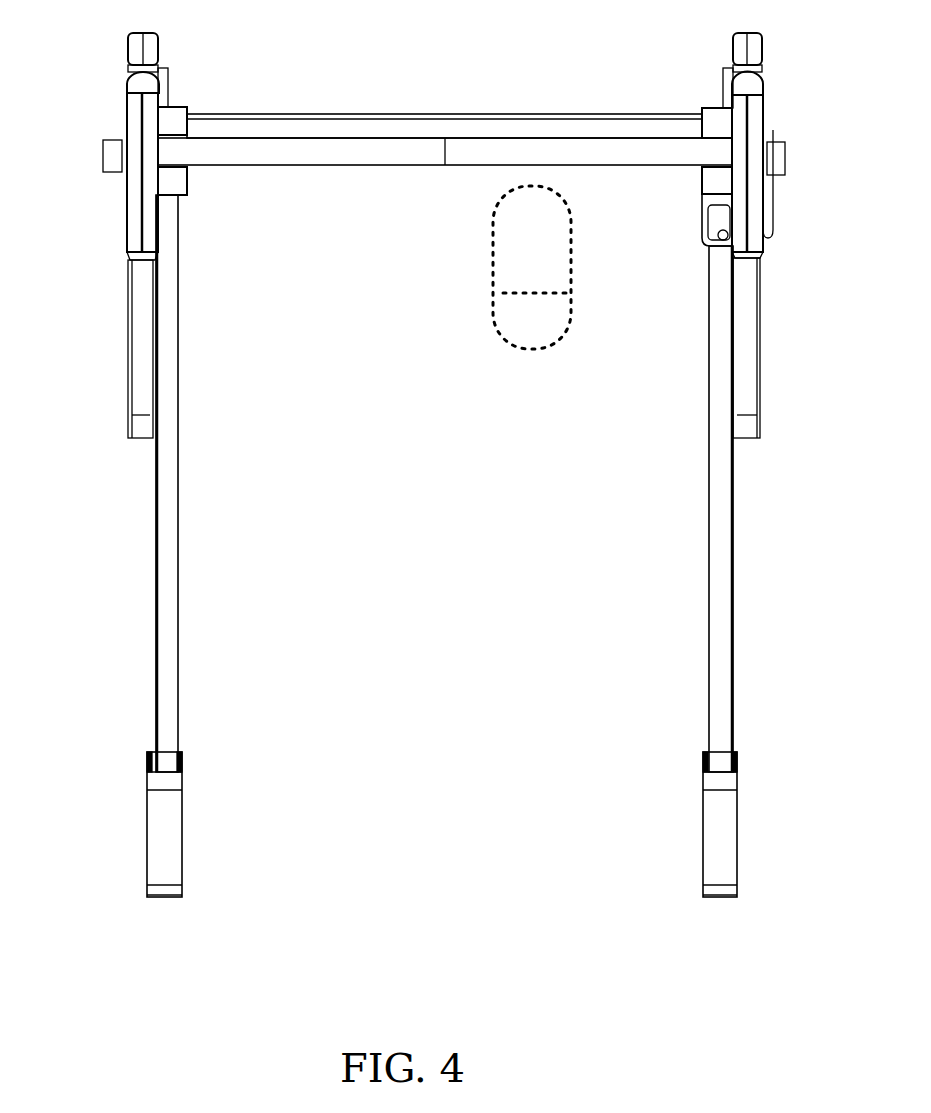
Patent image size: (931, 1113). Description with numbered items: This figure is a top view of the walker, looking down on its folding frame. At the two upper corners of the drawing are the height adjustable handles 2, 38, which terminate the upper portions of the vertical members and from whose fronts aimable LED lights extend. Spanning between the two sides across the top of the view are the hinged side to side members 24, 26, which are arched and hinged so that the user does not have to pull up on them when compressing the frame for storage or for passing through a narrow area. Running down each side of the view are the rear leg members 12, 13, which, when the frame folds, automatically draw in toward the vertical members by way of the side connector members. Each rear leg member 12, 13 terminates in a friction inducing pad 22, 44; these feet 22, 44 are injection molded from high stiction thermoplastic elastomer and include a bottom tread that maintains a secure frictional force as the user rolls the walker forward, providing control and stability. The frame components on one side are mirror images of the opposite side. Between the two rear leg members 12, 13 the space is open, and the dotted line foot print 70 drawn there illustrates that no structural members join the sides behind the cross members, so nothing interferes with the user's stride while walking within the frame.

The height adjustable handle 2 is at (449, 448).
The rear leg member 12 is at (180, 635).
The rear leg member 13 is at (722, 637).
The friction inducing pad 22 is at (177, 840).
The hinged side to side member 24 is at (303, 155).
The hinged side to side member 26 is at (595, 153).
The height adjustable handle 38 is at (756, 130).
The friction inducing pad 44 is at (723, 857).
The dotted line foot print 70 is at (527, 205).